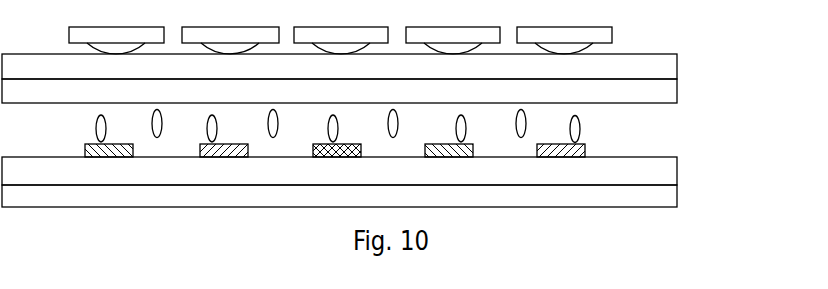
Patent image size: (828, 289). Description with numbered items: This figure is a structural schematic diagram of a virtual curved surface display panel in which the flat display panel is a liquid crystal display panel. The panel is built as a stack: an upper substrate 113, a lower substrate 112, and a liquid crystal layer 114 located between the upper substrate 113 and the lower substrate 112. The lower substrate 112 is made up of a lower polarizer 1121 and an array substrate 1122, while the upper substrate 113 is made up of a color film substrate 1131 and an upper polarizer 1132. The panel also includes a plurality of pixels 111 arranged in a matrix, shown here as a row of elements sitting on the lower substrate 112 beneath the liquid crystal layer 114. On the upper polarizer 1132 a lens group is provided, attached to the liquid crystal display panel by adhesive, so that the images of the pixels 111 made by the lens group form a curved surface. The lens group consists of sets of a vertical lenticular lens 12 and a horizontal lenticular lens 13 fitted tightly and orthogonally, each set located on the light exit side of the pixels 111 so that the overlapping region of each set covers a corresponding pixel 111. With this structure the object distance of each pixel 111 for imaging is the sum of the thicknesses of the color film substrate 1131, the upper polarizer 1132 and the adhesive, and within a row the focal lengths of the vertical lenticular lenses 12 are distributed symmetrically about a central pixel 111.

The vertical lenticular lens 12 is at (612, 32).
The horizontal lenticular lens 13 is at (558, 46).
The upper substrate 113 is at (396, 78).
The upper polarizer 1132 is at (664, 67).
The color film substrate 1131 is at (659, 92).
The liquid crystal layer 114 is at (580, 127).
The pixels 111 is at (585, 150).
The lower substrate 112 is at (396, 183).
The array substrate 1122 is at (662, 171).
The lower polarizer 1121 is at (665, 199).